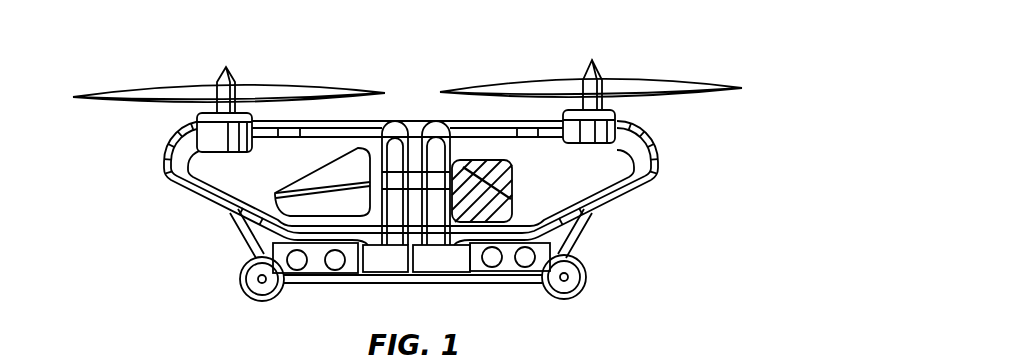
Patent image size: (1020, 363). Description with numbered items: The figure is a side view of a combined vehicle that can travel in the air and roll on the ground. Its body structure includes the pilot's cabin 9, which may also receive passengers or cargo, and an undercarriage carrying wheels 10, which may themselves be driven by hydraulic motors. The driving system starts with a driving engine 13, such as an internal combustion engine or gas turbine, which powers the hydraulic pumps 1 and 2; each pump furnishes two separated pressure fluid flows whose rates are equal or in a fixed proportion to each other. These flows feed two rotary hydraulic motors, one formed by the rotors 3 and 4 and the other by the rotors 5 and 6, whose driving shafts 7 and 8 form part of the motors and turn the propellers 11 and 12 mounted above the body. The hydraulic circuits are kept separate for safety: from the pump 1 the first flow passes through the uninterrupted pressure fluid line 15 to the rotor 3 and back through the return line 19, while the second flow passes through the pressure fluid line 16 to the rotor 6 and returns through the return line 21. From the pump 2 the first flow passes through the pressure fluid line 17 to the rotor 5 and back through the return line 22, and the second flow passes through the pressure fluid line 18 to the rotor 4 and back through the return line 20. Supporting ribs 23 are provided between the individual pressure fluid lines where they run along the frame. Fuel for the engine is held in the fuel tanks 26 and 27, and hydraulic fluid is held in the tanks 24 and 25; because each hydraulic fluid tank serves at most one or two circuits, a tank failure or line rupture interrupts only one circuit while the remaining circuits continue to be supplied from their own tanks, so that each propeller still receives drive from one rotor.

The hydraulic pump 1 is at (395, 262).
The hydraulic pump 2 is at (436, 262).
The rotor 3 is at (240, 144).
The rotor 4 is at (210, 140).
The rotor 5 is at (580, 144).
The rotor 6 is at (600, 136).
The driving shaft 7 is at (228, 66).
The driving shaft 8 is at (594, 60).
The pilot's cabin 9 is at (322, 207).
The wheels 10 is at (241, 284).
The propeller 11 is at (270, 91).
The propeller 12 is at (680, 84).
The driving engine 13 is at (336, 263).
The pressure fluid line 15 is at (341, 122).
The pressure fluid line 16 is at (462, 133).
The pressure fluid line 17 is at (485, 134).
The pressure fluid line 18 is at (380, 121).
The return line 19 is at (173, 168).
The return line 20 is at (183, 190).
The return line 21 is at (649, 161).
The return line 22 is at (624, 189).
The supporting ribs 23 is at (291, 128).
The hydraulic fluid tank 24 is at (464, 167).
The hydraulic fluid tank 25 is at (500, 202).
The fuel tank 26 is at (480, 180).
The fuel tank 27 is at (492, 190).